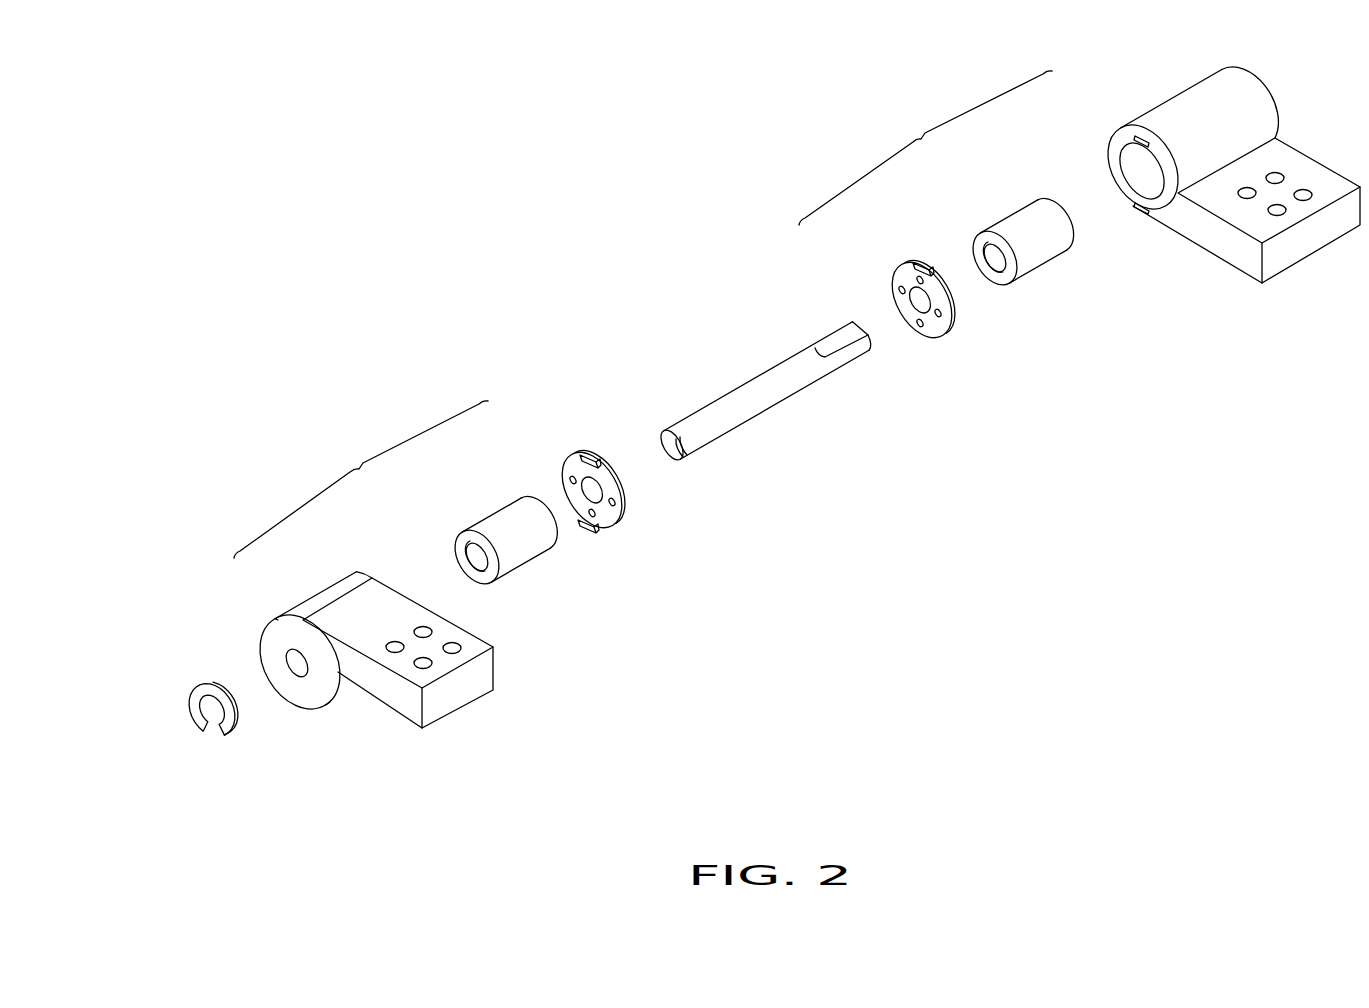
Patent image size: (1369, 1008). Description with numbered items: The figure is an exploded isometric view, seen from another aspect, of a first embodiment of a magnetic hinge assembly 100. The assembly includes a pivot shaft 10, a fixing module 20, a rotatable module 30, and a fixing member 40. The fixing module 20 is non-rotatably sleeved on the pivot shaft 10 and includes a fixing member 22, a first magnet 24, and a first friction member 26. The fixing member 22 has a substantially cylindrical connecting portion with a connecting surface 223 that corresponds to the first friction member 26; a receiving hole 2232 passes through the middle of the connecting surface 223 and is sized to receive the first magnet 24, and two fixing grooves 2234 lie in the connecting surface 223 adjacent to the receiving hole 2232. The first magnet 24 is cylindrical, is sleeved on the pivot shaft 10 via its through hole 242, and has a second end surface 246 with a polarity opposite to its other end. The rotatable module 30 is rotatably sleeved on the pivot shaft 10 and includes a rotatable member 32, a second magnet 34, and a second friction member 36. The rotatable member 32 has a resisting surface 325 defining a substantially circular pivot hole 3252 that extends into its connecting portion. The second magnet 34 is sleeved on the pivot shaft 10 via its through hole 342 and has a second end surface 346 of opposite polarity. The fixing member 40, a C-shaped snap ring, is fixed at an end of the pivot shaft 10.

The magnetic hinge assembly 100 is at (468, 202).
The pivot shaft 10 is at (763, 390).
The fixing module 20 is at (925, 148).
The fixing member 22 is at (1130, 115).
The connecting surface 223 is at (1162, 165).
The receiving hole 2232 is at (1133, 173).
The fixing grooves 2234 is at (1142, 210).
The first magnet 24 is at (983, 197).
The through hole 242 is at (997, 260).
The second end surface 246 is at (999, 252).
The first friction member 26 is at (888, 253).
The rotatable module 30 is at (361, 479).
The rotatable member 32 is at (327, 582).
The resisting surface 325 is at (317, 690).
The pivot hole 3252 is at (295, 668).
The second magnet 34 is at (450, 505).
The through hole 342 is at (482, 563).
The second end surface 346 is at (480, 543).
The second friction member 36 is at (562, 445).
The fixing member 40 is at (207, 693).